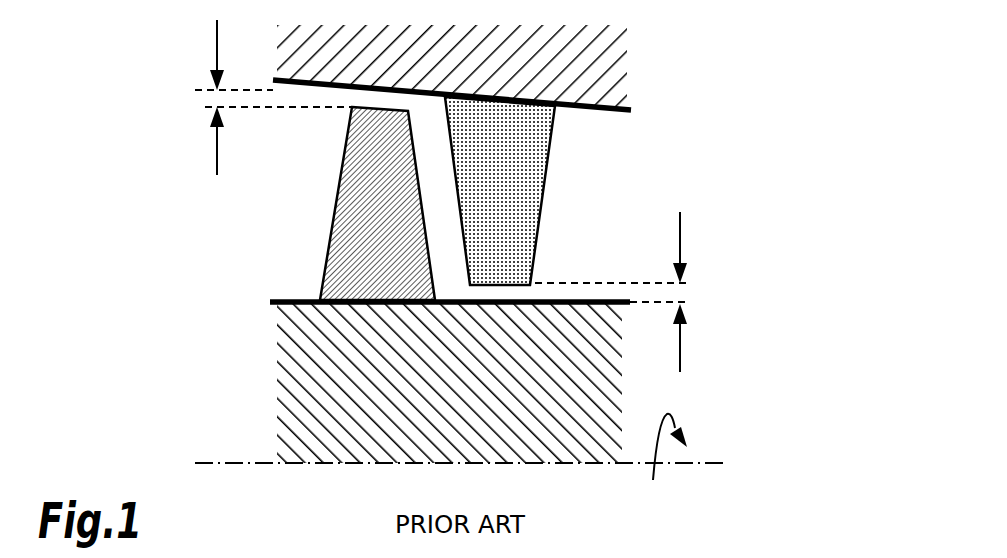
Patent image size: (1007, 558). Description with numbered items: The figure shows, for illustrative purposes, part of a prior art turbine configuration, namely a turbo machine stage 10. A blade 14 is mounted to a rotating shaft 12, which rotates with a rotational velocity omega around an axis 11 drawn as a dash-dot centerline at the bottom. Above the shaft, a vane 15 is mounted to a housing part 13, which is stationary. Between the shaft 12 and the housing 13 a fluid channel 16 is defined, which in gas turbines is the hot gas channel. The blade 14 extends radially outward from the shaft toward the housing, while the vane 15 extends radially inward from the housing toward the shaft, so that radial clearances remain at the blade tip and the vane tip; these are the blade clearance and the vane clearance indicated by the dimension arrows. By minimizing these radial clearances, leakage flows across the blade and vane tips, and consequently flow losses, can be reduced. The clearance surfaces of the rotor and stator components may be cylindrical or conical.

The turbo machine stage 10 is at (178, 262).
The axis 11 is at (245, 463).
The rotating shaft 12 is at (483, 406).
The housing part 13 is at (560, 77).
The blade 14 is at (401, 255).
The vane 15 is at (522, 215).
The fluid channel 16 is at (619, 222).